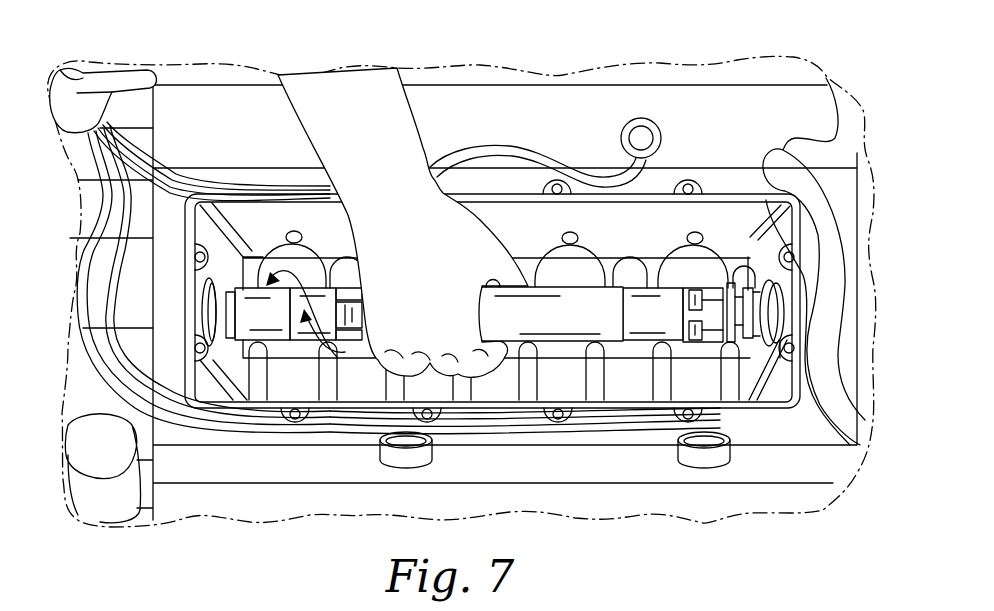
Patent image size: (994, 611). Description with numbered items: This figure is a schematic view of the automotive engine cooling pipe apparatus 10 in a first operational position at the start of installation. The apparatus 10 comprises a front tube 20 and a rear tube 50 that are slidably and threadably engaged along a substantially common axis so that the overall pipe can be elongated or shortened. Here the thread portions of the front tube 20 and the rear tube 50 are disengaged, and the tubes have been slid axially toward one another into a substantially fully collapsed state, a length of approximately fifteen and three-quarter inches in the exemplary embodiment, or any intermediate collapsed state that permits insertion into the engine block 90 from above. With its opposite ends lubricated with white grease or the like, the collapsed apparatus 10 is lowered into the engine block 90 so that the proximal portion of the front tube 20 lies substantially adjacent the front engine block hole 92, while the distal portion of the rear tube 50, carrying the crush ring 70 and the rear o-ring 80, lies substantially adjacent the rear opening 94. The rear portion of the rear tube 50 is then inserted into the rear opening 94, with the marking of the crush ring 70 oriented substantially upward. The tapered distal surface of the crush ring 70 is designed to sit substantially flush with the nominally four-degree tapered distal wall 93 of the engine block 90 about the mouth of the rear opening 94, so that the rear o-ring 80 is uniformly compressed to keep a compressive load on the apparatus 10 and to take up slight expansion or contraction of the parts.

The automotive engine cooling pipe apparatus 10 is at (558, 280).
The front tube 20 is at (310, 278).
The rear tube 50 is at (653, 280).
The crush ring 70 is at (732, 284).
The rear o-ring 80 is at (745, 314).
The engine block 90 is at (219, 459).
The front engine block hole 92 is at (230, 314).
The distal wall of the engine block 93 is at (812, 180).
The rear opening 94 is at (846, 236).